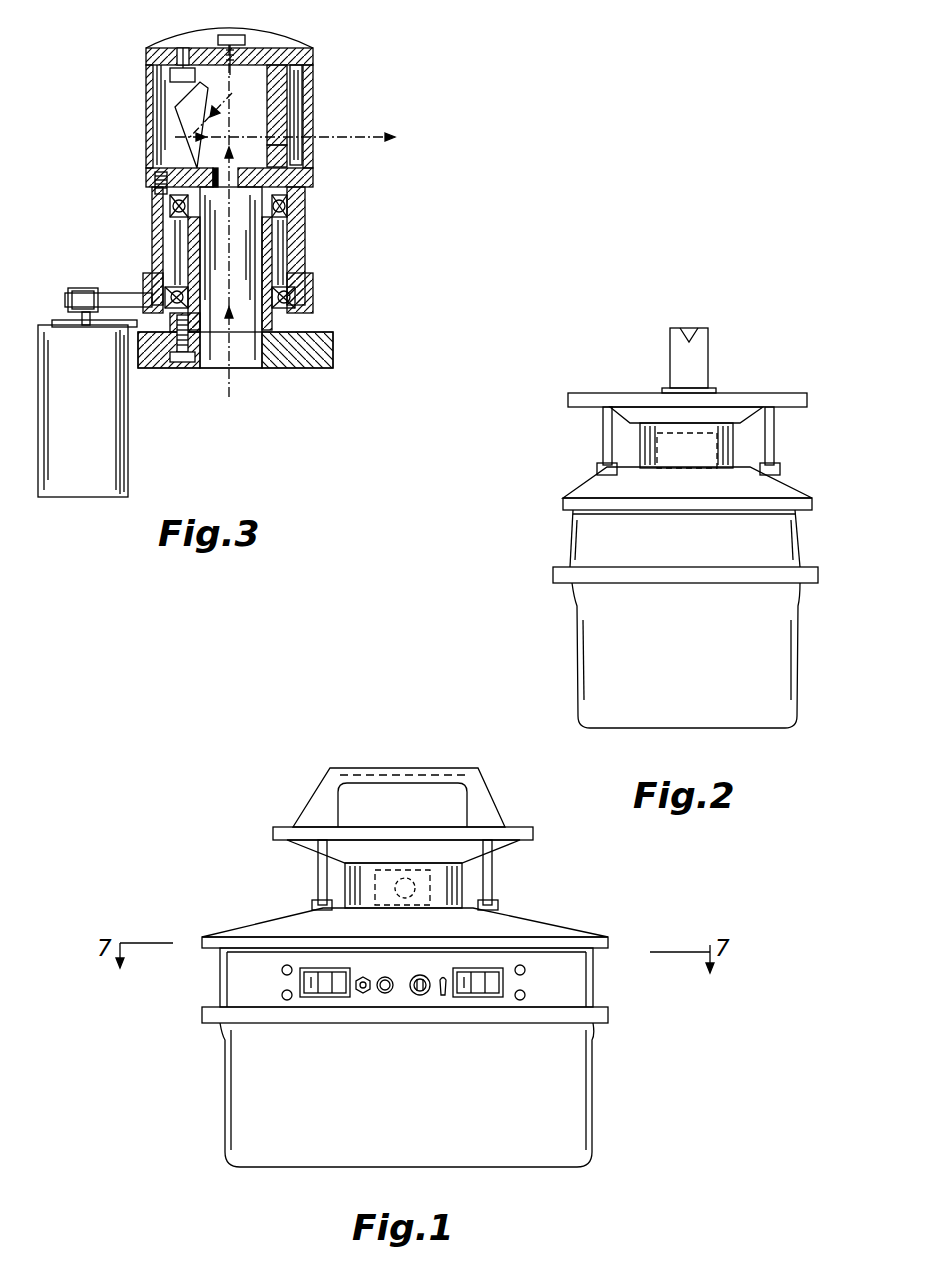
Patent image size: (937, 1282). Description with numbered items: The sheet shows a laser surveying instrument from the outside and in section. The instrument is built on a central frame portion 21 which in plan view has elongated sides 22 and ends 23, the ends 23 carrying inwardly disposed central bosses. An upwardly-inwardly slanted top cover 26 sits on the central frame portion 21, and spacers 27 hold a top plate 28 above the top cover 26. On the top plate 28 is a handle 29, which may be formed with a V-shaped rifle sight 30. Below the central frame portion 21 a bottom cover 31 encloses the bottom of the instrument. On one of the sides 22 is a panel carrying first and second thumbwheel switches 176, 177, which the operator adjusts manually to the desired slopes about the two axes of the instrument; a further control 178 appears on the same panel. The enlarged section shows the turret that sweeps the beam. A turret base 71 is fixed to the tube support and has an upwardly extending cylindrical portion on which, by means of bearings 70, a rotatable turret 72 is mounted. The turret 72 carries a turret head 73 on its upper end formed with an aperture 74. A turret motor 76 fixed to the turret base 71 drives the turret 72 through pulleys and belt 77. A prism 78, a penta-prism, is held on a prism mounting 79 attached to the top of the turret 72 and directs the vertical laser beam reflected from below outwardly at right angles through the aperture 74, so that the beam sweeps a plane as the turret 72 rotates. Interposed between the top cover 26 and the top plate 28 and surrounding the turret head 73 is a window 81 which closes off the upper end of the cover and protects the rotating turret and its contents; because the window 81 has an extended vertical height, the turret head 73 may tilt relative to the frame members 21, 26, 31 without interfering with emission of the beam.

In FIG. 2, the central frame portion 21 is at (800, 538).
In FIG. 1, the central frame portion 21 is at (222, 970).
In FIG. 1, the sides 22 is at (565, 982).
In FIG. 2, the ends 23 is at (578, 542).
In FIG. 1, the ends 23 is at (405, 928).
In FIG. 2, the top cover 26 is at (651, 472).
In FIG. 2, the spacers 27 is at (600, 428).
In FIG. 1, the spacers 27 is at (495, 877).
In FIG. 2, the top plate 28 is at (607, 393).
In FIG. 1, the top plate 28 is at (533, 832).
In FIG. 2, the handle 29 is at (668, 338).
In FIG. 1, the handle 29 is at (420, 783).
In FIG. 2, the V-shaped rifle sight 30 is at (700, 335).
In FIG. 1, the V-shaped rifle sight 30 is at (368, 775).
In FIG. 2, the bottom cover 31 is at (694, 664).
In FIG. 1, the bottom cover 31 is at (220, 1085).
In FIG. 3, the bearings 70 is at (172, 208).
In FIG. 3, the turret base 71 is at (315, 335).
In FIG. 3, the turret 72 is at (300, 226).
In FIG. 3, the turret head 73 is at (310, 48).
In FIG. 2, the turret head 73 is at (722, 450).
In FIG. 1, the turret head 73 is at (440, 891).
In FIG. 3, the aperture 74 is at (313, 137).
In FIG. 1, the aperture 74 is at (380, 891).
In FIG. 3, the turret motor 76 is at (92, 438).
In FIG. 3, the pulleys and belt 77 is at (152, 282).
In FIG. 3, the prism 78 is at (172, 92).
In FIG. 3, the prism mounting 79 is at (188, 168).
In FIG. 2, the window 81 is at (645, 437).
In FIG. 1, the window 81 is at (350, 876).
In FIG. 1, the first thumbwheel switch 176 is at (326, 998).
In FIG. 1, the second thumbwheel switch 177 is at (476, 998).
In FIG. 1, the switch 178 is at (398, 998).